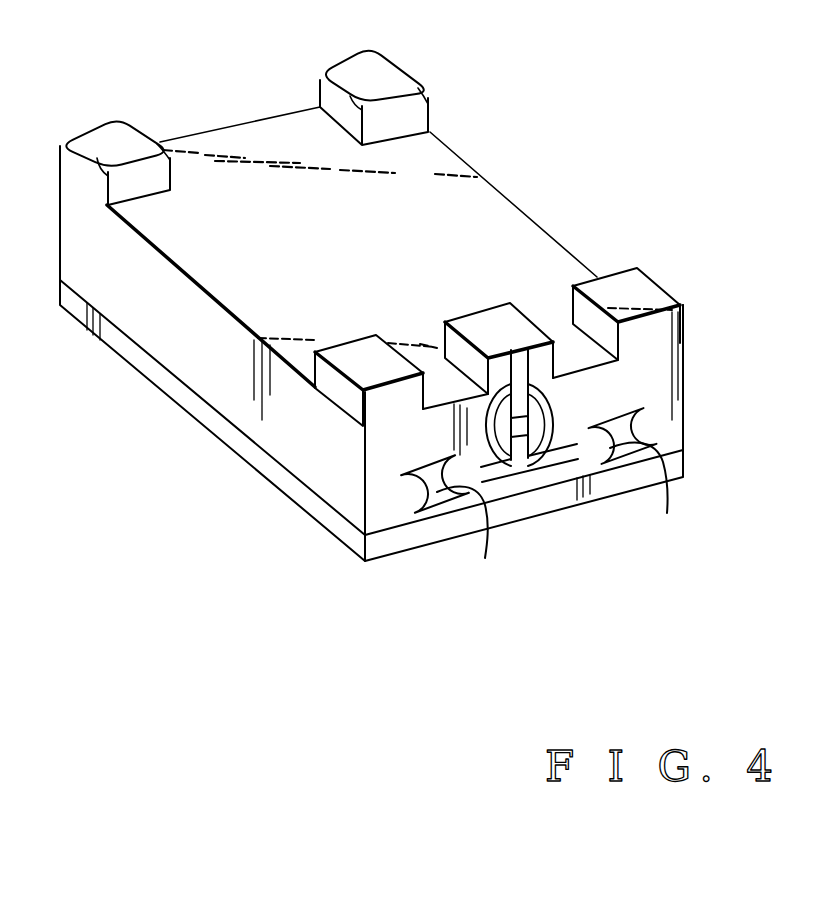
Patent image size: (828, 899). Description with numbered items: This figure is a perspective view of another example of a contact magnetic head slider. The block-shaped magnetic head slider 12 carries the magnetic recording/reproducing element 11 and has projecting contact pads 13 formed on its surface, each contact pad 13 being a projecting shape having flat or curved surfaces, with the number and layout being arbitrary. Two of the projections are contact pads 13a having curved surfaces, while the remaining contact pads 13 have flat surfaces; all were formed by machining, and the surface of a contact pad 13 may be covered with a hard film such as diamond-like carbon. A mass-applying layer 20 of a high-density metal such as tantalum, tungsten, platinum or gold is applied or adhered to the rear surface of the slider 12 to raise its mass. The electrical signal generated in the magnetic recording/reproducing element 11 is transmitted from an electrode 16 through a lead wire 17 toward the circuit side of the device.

The magnetic recording/reproducing element 11 is at (541, 470).
The magnetic head slider 12 is at (302, 552).
The contact pad 13 is at (377, 353).
The contact pad 13a is at (108, 138).
The electrode 16 is at (420, 500).
The lead wire 17 is at (485, 530).
The mass-applying layer 20 is at (208, 420).